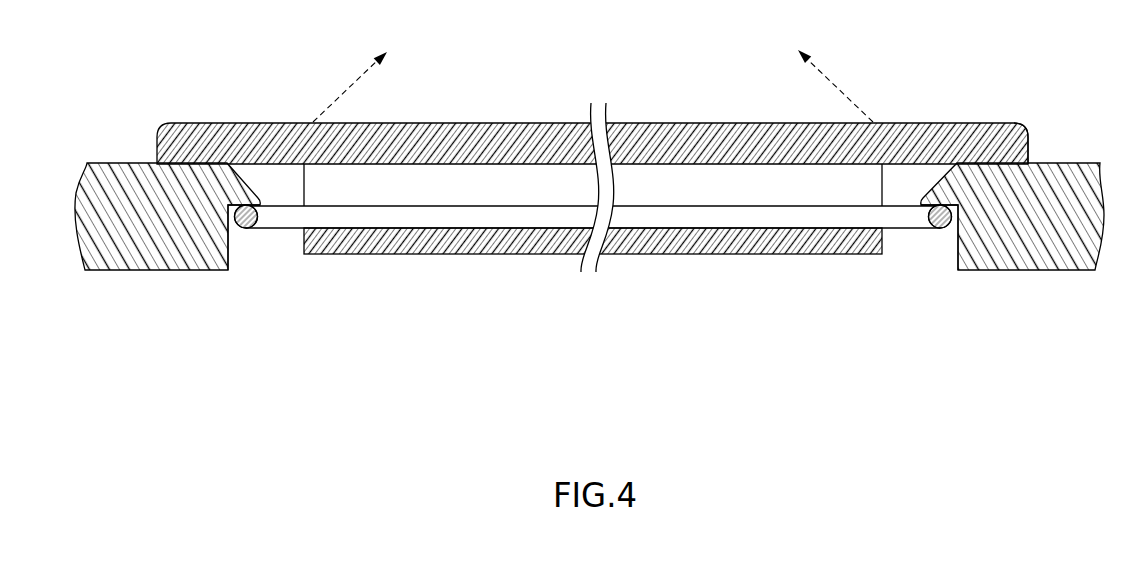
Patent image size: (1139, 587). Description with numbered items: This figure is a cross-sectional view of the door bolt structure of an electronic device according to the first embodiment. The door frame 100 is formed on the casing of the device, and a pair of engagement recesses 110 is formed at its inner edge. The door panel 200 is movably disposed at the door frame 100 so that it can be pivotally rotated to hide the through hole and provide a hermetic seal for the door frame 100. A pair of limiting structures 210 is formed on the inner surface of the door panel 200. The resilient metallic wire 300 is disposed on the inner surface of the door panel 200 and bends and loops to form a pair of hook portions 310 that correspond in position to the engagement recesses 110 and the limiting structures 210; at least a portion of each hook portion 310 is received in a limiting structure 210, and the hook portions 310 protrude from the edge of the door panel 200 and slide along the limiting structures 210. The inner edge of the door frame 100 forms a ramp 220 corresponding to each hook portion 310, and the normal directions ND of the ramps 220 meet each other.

The door frame 100 is at (149, 235).
The engagement recesses 110 is at (242, 260).
The door panel 200 is at (468, 137).
The limiting structures 210 is at (482, 245).
The ramp 220 is at (942, 133).
The resilient metallic wire 300 is at (393, 215).
The hook portions 310 is at (252, 228).
The normal directions ND is at (842, 90).